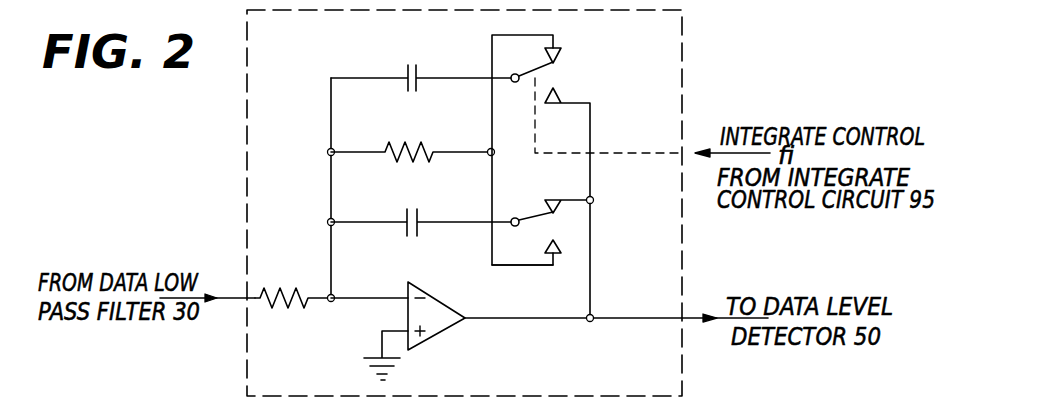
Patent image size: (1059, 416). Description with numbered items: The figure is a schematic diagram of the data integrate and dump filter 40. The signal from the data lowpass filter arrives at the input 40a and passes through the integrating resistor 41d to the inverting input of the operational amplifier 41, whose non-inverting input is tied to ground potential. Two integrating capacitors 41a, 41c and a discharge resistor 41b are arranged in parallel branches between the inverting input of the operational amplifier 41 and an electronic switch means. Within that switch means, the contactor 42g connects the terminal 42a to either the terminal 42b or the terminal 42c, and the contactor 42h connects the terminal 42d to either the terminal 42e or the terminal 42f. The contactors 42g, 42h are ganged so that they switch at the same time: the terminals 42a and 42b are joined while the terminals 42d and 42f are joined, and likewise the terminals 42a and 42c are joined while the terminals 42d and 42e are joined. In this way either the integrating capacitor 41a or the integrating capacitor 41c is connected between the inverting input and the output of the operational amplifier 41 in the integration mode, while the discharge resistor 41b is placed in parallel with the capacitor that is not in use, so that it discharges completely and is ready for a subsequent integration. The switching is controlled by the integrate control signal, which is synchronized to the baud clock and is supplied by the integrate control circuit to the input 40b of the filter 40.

The data I&D filter 40 is at (683, 36).
The input 40a is at (225, 296).
The input 40b is at (700, 150).
The operational amplifier 41 is at (432, 337).
The integrating capacitor 41a is at (413, 66).
The discharge resistor 41b is at (418, 142).
The integrating capacitor 41c is at (412, 211).
The integrating resistor 41d is at (280, 292).
The terminal 42a is at (515, 72).
The terminal 42b is at (560, 52).
The terminal 42c is at (562, 98).
The terminal 42d is at (516, 217).
The terminal 42e is at (558, 250).
The terminal 42f is at (557, 199).
The contactor 42g is at (521, 105).
The contactor 42h is at (527, 235).